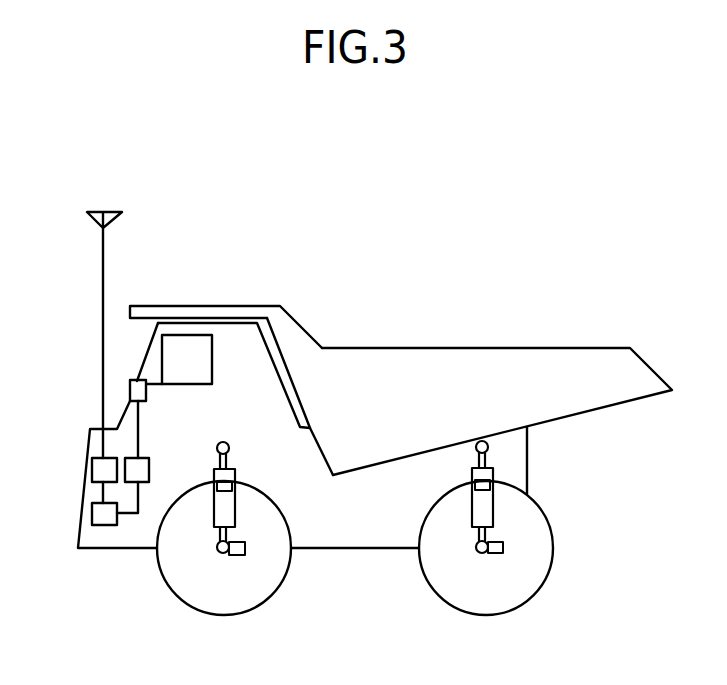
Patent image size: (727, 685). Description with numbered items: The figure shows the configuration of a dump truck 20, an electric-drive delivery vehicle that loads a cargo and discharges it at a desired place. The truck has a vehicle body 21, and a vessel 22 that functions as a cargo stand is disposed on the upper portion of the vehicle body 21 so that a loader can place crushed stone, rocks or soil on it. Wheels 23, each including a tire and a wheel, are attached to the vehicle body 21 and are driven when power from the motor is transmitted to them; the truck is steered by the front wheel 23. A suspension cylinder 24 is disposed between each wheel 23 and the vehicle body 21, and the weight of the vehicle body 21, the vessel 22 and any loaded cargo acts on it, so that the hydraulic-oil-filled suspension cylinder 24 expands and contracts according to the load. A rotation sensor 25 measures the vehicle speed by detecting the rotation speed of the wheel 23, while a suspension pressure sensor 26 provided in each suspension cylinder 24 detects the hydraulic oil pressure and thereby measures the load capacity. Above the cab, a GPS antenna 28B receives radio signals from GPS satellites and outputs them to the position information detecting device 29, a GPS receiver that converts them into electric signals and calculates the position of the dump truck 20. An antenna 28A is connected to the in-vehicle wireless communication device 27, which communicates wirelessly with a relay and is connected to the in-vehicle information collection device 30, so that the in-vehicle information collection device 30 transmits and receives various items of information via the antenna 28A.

The dump truck 20 is at (514, 181).
The vehicle body 21 is at (530, 438).
The vessel 22 is at (382, 348).
The wheel 23 is at (233, 615).
The suspension cylinder 24 is at (237, 508).
The rotation sensor 25 is at (240, 557).
The suspension pressure sensor 26 is at (223, 442).
The in-vehicle wireless communication device 27 is at (92, 470).
The antenna 28A is at (111, 212).
The GPS antenna 28B is at (131, 383).
The position information detecting device 29 is at (147, 483).
The in-vehicle information collection device 30 is at (92, 516).